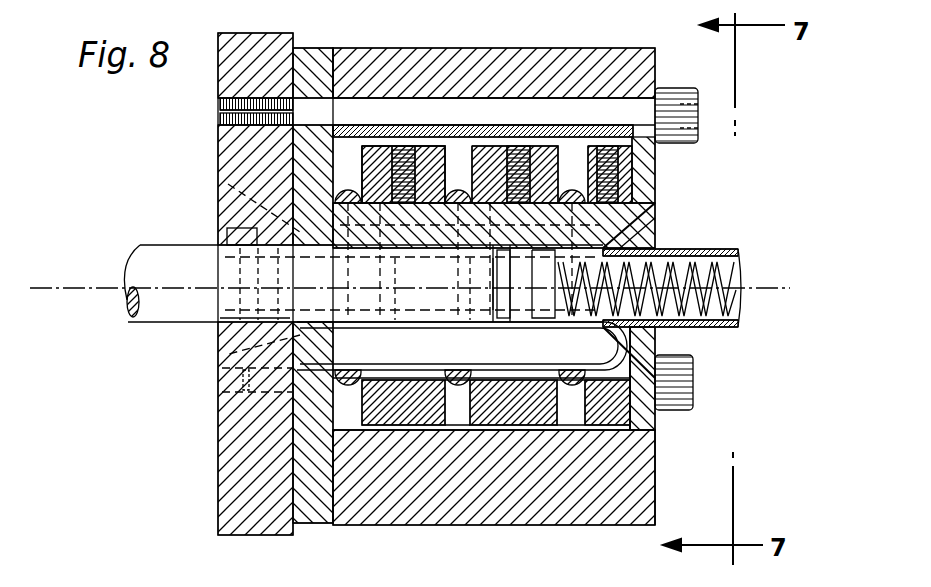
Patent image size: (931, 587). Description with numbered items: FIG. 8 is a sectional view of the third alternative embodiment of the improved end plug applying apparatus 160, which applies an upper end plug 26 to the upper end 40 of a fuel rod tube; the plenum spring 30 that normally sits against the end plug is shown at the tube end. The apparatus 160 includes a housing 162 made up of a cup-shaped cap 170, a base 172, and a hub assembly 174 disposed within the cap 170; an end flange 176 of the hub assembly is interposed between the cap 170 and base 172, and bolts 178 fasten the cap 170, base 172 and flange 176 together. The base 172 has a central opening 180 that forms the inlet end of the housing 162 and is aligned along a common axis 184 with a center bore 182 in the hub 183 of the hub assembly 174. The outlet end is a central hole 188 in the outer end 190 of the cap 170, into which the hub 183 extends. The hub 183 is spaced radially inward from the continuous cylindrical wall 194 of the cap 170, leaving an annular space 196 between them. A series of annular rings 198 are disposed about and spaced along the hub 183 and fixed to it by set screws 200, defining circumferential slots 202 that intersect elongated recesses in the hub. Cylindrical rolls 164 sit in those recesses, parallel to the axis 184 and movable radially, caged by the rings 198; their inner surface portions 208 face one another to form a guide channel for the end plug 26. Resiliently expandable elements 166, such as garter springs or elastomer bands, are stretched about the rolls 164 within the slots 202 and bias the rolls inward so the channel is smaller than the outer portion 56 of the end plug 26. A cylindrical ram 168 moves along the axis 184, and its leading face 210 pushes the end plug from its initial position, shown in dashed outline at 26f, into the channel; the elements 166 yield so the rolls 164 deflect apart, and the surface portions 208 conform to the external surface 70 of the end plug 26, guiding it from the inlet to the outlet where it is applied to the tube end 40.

The upper end plug 26 is at (530, 323).
The initial position of end plug 26f is at (225, 268).
The plenum spring 30 is at (730, 285).
The upper end of tube 40 is at (655, 343).
The outer portion of end plug 56 is at (515, 328).
The external surface of end plug 70 is at (520, 296).
The end plug applying apparatus 160 is at (583, 42).
The housing 162 is at (348, 48).
The rolls 164 is at (228, 184).
The resiliently expandable elements 166 is at (352, 368).
The cylindrical ram 168 is at (140, 322).
The cup-shaped cap 170 is at (505, 527).
The base 172 is at (217, 508).
The hub assembly 174 is at (652, 220).
The end flange 176 is at (299, 47).
The bolts 178 is at (690, 88).
The central opening 180 is at (215, 308).
The center bore 182 is at (295, 394).
The hub 183 is at (652, 241).
The common axis 184 is at (742, 300).
The central hole 188 is at (657, 209).
The outer end of cap 190 is at (657, 168).
The cylindrical wall 194 is at (430, 432).
The annular space 196 is at (345, 432).
The annular rings 198 is at (500, 432).
The set screws 200 is at (405, 113).
The circumferential slots 202 is at (360, 137).
The inner surface portions of rolls 208 is at (396, 326).
The leading face of ram 210 is at (475, 330).